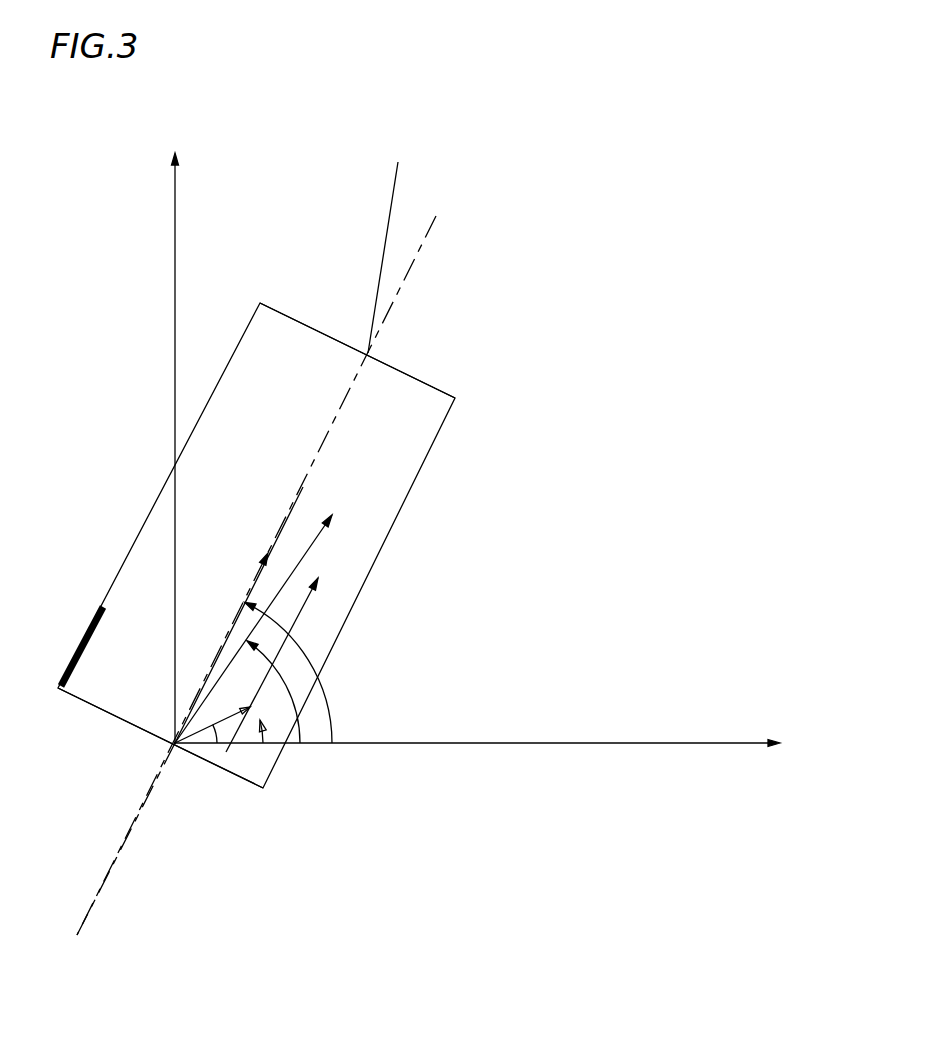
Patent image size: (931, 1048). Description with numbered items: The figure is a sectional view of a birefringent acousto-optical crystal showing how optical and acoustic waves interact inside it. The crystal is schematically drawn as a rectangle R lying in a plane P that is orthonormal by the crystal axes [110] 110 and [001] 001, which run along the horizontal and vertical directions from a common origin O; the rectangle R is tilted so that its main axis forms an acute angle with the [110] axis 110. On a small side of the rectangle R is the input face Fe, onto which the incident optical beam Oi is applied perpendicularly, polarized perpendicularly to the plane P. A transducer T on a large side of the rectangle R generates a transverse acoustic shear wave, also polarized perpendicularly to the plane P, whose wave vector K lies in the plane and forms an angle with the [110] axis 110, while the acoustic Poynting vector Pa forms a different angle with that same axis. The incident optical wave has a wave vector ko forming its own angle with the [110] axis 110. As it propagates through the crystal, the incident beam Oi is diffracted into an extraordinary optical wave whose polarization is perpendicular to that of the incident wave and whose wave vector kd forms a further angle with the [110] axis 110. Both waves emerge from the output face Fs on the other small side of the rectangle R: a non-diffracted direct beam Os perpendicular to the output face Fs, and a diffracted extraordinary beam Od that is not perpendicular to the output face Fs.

The [001] crystal axis 001 is at (137, 448).
The [110] crystal axis 110 is at (489, 767).
The origin O is at (159, 752).
The rectangle R is at (385, 545).
The output face Fs is at (438, 388).
The input face Fe is at (240, 779).
The transducer T is at (87, 632).
The non-diffracted direct beam Os is at (415, 260).
The incident optical beam Oi is at (116, 856).
The diffracted extraordinary beam Od is at (394, 188).
The wave vector of the incident optical wave ko is at (242, 607).
The wave vector of the diffracted optical wave kd is at (306, 556).
The Poynting vector Pa is at (297, 620).
The acoustic wave vector K is at (218, 718).